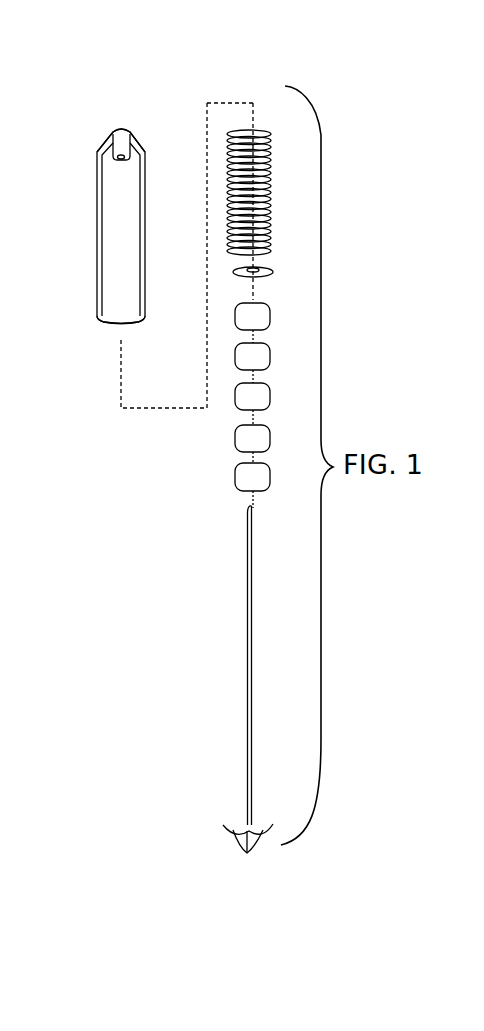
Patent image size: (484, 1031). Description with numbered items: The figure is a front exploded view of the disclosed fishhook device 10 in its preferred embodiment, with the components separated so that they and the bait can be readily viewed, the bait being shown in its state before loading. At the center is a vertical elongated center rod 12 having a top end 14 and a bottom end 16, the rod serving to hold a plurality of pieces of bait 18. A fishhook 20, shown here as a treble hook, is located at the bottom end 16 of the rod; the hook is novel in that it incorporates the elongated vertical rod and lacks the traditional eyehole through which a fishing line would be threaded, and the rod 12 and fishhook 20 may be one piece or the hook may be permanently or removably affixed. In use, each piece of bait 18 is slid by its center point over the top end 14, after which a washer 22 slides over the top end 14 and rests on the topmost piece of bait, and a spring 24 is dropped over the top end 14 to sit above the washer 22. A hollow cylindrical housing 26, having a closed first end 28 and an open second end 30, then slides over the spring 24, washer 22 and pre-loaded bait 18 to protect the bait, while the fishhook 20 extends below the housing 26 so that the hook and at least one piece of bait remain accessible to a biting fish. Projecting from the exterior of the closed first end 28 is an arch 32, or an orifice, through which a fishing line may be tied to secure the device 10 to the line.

The device 10 is at (201, 53).
The center rod 12 is at (247, 663).
The top end 14 is at (247, 517).
The bottom end 16 is at (245, 822).
The bait 18 is at (252, 405).
The fishhook 20 is at (247, 852).
The washer 22 is at (276, 272).
The spring 24 is at (273, 135).
The housing 26 is at (121, 226).
The closed first end 28 is at (97, 148).
The open second end 30 is at (97, 320).
The arch 32 is at (128, 134).